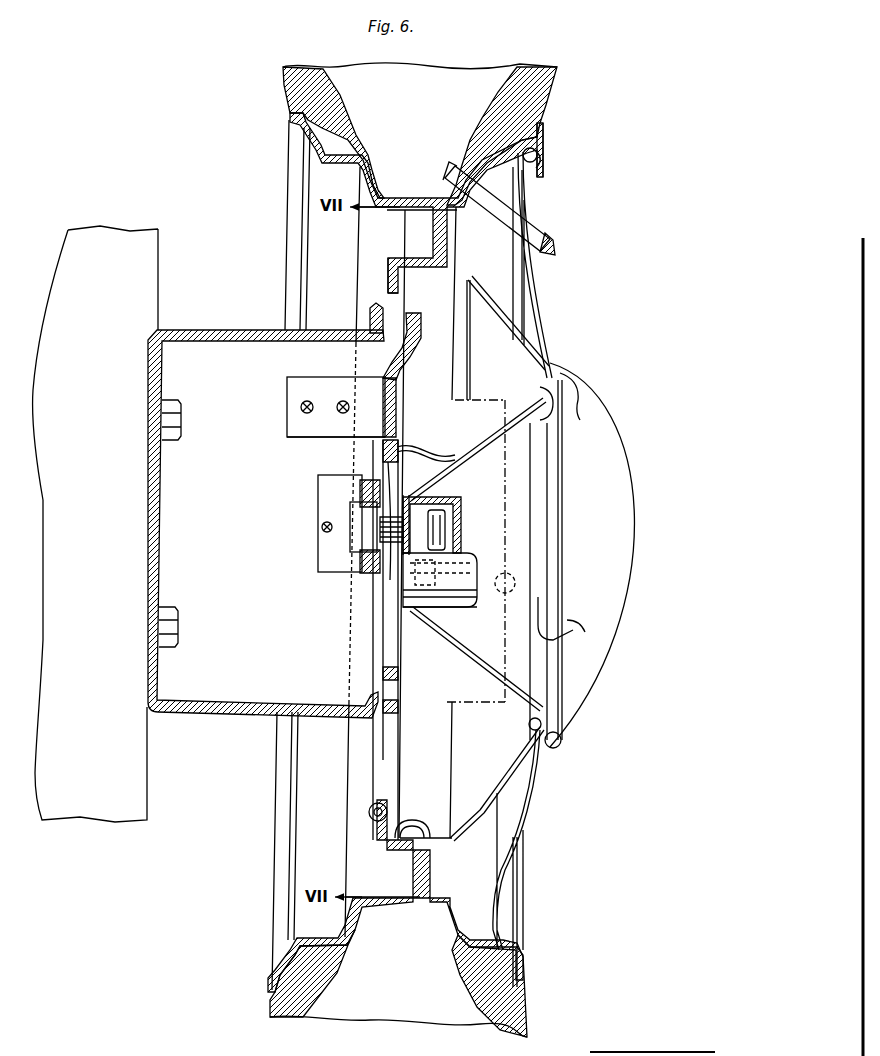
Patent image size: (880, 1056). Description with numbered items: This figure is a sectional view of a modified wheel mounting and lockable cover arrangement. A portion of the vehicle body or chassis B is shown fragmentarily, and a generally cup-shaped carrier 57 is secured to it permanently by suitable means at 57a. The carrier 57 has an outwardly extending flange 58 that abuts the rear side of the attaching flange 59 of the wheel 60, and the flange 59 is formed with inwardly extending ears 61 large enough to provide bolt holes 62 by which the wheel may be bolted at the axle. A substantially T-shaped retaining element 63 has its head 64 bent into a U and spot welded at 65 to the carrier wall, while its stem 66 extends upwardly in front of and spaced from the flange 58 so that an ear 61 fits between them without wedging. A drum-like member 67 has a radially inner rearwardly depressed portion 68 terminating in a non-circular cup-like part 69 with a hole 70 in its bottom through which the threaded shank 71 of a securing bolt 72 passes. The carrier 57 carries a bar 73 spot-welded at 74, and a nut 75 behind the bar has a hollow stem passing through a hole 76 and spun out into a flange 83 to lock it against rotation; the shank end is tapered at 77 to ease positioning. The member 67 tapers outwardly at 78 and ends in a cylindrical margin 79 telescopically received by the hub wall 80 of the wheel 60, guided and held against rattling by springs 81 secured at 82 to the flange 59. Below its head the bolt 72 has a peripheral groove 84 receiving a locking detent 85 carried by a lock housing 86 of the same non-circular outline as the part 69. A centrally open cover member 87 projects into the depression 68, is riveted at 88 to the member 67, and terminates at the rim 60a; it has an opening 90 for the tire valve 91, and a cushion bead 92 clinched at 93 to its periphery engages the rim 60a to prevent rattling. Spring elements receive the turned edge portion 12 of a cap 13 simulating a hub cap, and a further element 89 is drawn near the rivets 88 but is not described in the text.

The turned edge portion 12 is at (560, 560).
The cap 13 is at (631, 470).
The carrier 57 is at (258, 330).
The securing means 57a is at (184, 432).
The outwardly extending flange 58 is at (372, 317).
The attaching flange 59 is at (390, 268).
The wheel 60 is at (290, 140).
The rim 60a is at (546, 132).
The ears 61 is at (412, 345).
The bolt holes 62 is at (393, 293).
The retaining element 63 is at (283, 397).
The head 64 is at (285, 422).
The spot welds 65 is at (307, 413).
The stem 66 is at (418, 322).
The drum-like member 67 is at (515, 780).
The depressed portion 68 is at (500, 444).
The cup-like part 69 is at (412, 493).
The hole 70 is at (392, 582).
The threaded shank 71 is at (388, 456).
The securing bolt 72 is at (437, 530).
The bar 73 is at (345, 565).
The spot weld 74 is at (322, 530).
The nut 75 is at (340, 500).
The hole 76 is at (362, 575).
The tapered end 77 is at (350, 538).
The outwardly tapered portion 78 is at (522, 340).
The cylindrical margin 79 is at (410, 748).
The hub wall 80 is at (428, 255).
The springs 81 is at (447, 445).
The spring attachment 82 is at (369, 812).
The flange 83 is at (395, 562).
The peripheral groove 84 is at (450, 500).
The locking detent 85 is at (470, 565).
The lock housing 86 is at (448, 610).
The cover member 87 is at (550, 333).
The rivets 88 is at (540, 398).
The hook 89 is at (576, 410).
The opening 90 is at (510, 242).
The tire valve 91 is at (512, 215).
The cushion bead 92 is at (520, 182).
The clinch 93 is at (540, 152).
The vehicle body or chassis B is at (160, 265).